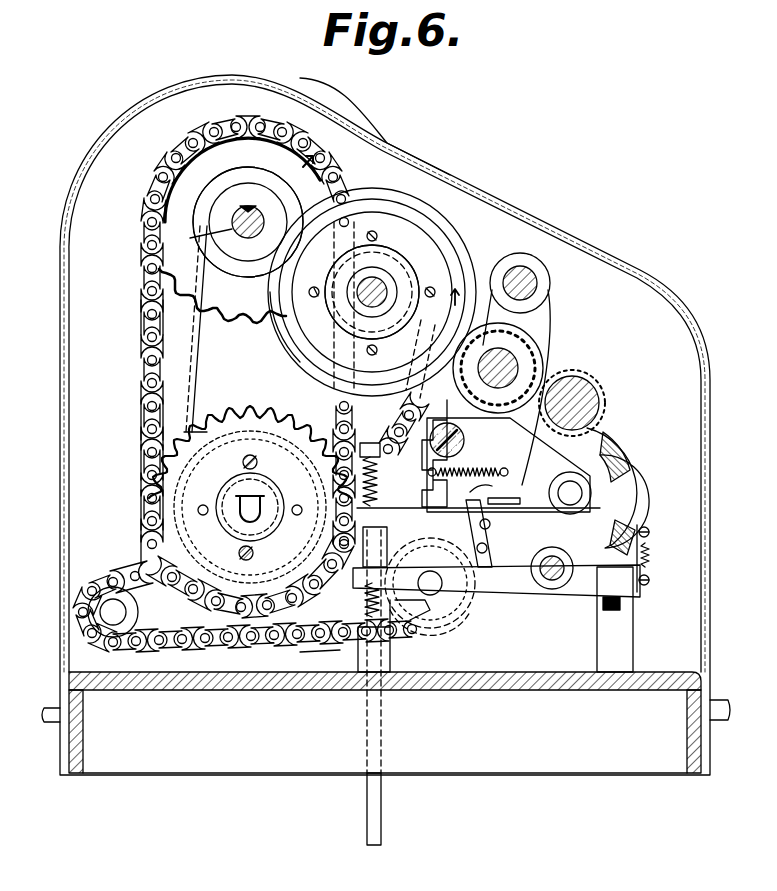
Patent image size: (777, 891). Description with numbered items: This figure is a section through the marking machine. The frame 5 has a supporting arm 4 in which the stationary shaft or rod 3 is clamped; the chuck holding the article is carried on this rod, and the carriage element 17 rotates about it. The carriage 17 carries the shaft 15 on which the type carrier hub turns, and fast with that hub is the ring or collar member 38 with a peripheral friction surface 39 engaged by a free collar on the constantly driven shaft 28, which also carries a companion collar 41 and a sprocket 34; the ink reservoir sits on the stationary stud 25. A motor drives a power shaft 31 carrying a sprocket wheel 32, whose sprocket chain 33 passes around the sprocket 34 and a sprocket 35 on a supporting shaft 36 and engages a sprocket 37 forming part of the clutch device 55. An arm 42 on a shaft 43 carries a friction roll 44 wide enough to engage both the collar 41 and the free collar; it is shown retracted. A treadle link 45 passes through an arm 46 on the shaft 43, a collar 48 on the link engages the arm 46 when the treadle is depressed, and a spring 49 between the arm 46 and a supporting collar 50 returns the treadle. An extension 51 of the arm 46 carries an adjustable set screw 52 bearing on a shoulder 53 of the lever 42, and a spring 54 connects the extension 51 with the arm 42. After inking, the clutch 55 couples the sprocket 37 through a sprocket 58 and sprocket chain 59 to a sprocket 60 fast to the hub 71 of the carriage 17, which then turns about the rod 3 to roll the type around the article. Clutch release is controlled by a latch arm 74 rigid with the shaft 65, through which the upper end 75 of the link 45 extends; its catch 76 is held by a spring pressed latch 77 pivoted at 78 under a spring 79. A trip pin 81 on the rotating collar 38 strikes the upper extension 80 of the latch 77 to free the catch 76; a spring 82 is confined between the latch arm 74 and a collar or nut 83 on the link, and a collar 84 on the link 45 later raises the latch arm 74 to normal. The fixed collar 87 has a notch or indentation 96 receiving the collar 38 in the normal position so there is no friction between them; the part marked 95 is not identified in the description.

The stationary shaft or rod 3 is at (200, 241).
The supporting arm 4 is at (205, 347).
The frame 5 is at (674, 673).
The shaft 15 is at (380, 289).
The carriage element 17 is at (351, 212).
The stationary stud 25 is at (524, 280).
The driving shaft 28 is at (535, 337).
The power shaft 31 is at (465, 640).
The sprocket wheel 32 is at (428, 628).
The sprocket chain 33 is at (236, 648).
The sprocket 34 is at (508, 464).
The sprocket 35 is at (163, 572).
The supporting shaft 36 is at (116, 616).
The sprocket 37 is at (164, 509).
The ring or collar member 38 is at (386, 208).
The peripheral friction surface 39 is at (432, 222).
The companion collar 41 is at (532, 364).
The arm 42 is at (636, 472).
The shaft 43 is at (552, 582).
The friction roll 44 is at (590, 392).
The link 45 is at (382, 806).
The arm 46 is at (450, 618).
The collar 48 is at (363, 596).
The spring 49 is at (396, 626).
The supporting collar 50 is at (342, 654).
The extension 51 is at (630, 600).
The adjustable set screw 52 is at (640, 521).
The shoulder 53 is at (651, 556).
The spring 54 is at (650, 580).
The clutch device 55 is at (150, 463).
The sprocket 58 is at (141, 421).
The sprocket chain 59 is at (141, 319).
The sprocket 60 is at (158, 291).
The shaft 65 is at (564, 502).
The hub 71 is at (200, 207).
The latch arm 74 is at (492, 540).
The upper end 75 is at (304, 478).
The catch 76 is at (521, 500).
The spring pressed latch 77 is at (420, 462).
The pivot 78 is at (462, 450).
The spring 79 is at (506, 470).
The upper extension 80 is at (388, 336).
The trip pin 81 is at (298, 322).
The spring 82 is at (378, 494).
The collar or nut 83 is at (369, 443).
The collar 84 is at (322, 530).
The fixed collar 87 is at (240, 202).
The housing wall 95 is at (364, 128).
The notch or indentation 96 is at (290, 155).